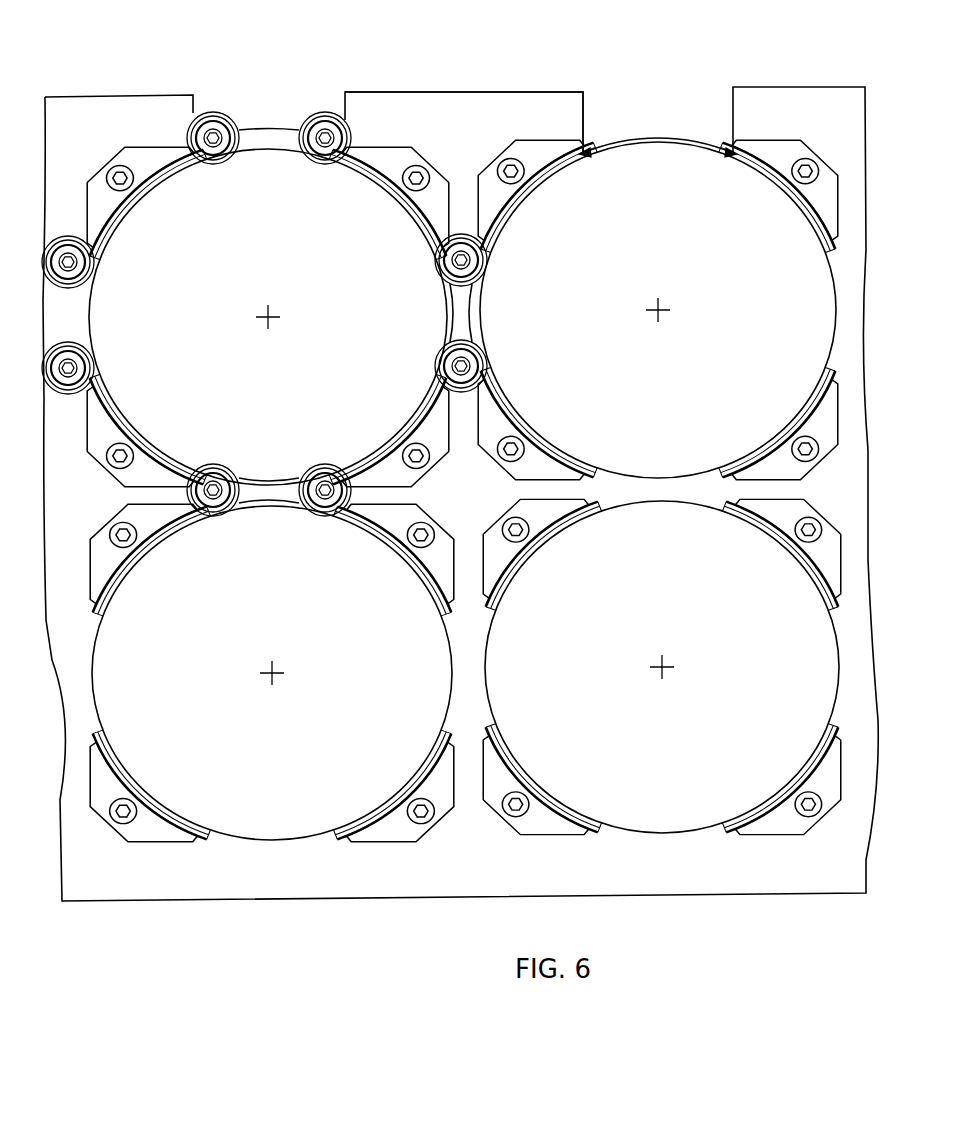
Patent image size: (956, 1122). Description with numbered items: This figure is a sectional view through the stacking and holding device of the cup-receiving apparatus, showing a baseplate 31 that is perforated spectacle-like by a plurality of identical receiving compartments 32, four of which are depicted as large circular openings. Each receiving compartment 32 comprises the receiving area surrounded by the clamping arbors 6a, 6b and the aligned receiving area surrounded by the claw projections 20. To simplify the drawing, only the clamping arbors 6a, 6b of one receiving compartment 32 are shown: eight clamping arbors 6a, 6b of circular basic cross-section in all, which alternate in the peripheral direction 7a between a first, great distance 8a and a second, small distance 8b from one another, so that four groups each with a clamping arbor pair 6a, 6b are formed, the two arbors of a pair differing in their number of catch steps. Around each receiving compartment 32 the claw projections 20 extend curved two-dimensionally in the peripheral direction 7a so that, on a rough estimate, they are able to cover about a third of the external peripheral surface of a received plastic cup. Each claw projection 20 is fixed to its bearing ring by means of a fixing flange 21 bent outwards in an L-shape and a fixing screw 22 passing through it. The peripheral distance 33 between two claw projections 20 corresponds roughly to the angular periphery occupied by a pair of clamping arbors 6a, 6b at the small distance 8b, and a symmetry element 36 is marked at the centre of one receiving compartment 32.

The clamping arbor 6a is at (213, 112).
The clamping arbor 6b is at (325, 112).
The peripheral direction 7a is at (399, 210).
The great distance 8a is at (148, 160).
The small distance 8b is at (258, 128).
The claw projections 20 is at (548, 176).
The fixing flange 21 is at (547, 151).
The fixing screw 22 is at (500, 162).
The baseplate 31 is at (318, 895).
The receiving compartment 32 is at (687, 627).
The peripheral distance 33 is at (641, 143).
The symmetry element 36 is at (276, 311).